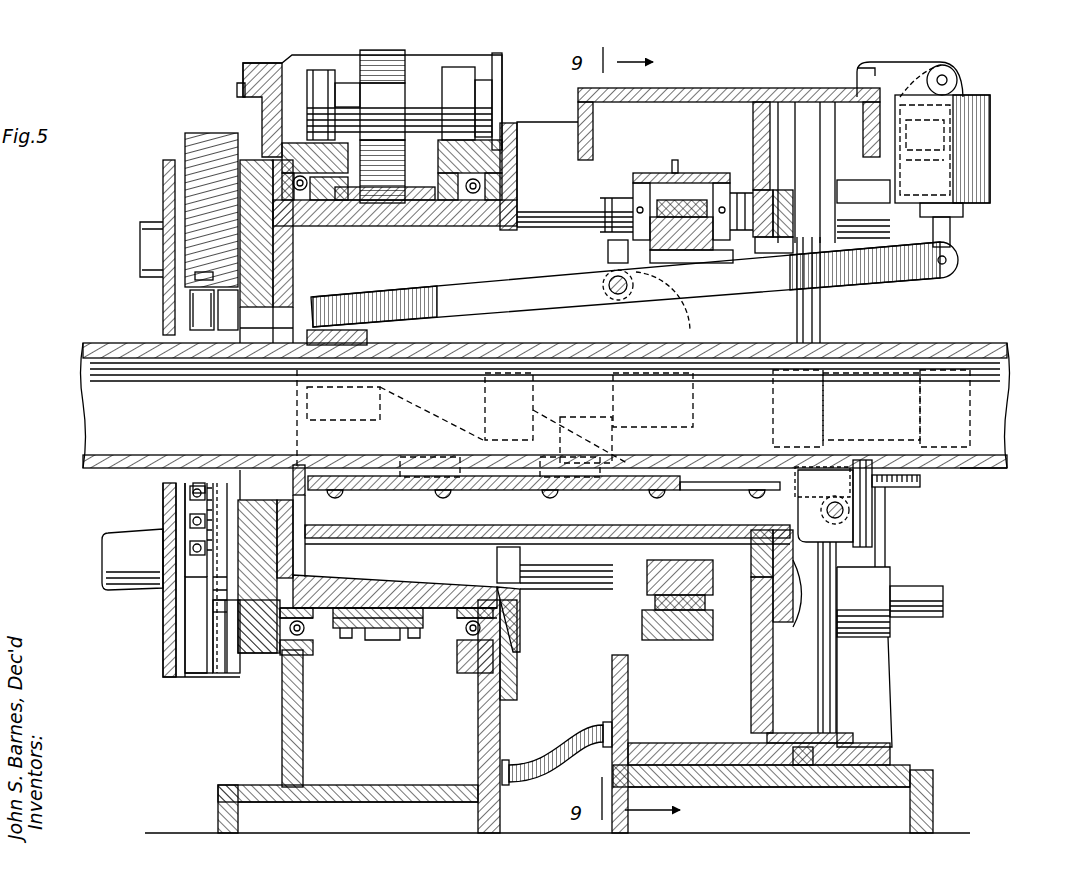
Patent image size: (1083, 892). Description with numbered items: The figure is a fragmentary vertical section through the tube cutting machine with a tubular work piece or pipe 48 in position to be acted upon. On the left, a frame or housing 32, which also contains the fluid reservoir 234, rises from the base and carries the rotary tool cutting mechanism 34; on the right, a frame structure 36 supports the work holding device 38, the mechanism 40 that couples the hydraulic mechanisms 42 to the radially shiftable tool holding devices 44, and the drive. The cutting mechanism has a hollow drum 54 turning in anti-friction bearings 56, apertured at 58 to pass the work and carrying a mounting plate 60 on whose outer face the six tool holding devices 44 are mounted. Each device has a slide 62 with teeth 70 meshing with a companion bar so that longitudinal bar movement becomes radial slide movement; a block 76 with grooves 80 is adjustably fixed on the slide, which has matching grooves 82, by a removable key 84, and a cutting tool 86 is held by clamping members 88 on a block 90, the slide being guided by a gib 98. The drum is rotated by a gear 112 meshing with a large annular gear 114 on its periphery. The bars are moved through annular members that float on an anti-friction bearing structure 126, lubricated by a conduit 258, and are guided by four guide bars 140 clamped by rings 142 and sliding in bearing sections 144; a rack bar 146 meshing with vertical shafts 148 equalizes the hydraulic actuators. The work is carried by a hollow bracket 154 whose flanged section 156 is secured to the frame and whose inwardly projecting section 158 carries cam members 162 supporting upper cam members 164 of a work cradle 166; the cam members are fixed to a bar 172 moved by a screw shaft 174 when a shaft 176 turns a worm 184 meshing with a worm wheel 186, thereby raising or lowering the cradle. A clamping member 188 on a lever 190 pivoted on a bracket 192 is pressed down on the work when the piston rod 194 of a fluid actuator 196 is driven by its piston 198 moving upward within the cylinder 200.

The frame or housing 32 is at (282, 744).
The rotary tool cutting mechanism 34 is at (168, 670).
The frame structure 36 is at (880, 691).
The work holding device 38 is at (430, 512).
The mechanism 40 is at (677, 647).
The hydraulic mechanisms 42 is at (985, 460).
The tool holding devices 44 is at (160, 302).
The pipe 48 is at (83, 345).
The rotary member or drum 54 is at (390, 592).
The anti-friction bearings 56 is at (500, 185).
The aperture 58 is at (290, 318).
The mounting plate or disk 60 is at (272, 249).
The slide 62 is at (212, 150).
The teeth 70 is at (205, 190).
The block 76 is at (200, 673).
The grooves 80 is at (212, 618).
The grooves 82 is at (214, 603).
The key 84 is at (215, 584).
The cutting tool 86 is at (190, 325).
The clamping members 88 is at (190, 548).
The block 90 is at (192, 505).
The gib 98 is at (178, 590).
The gear 112 is at (396, 158).
The annular gear 114 is at (362, 178).
The anti-friction bearing structure 126 is at (683, 230).
The guide bars 140 is at (919, 593).
The clamping rings 142 is at (630, 200).
The bearing sections 144 is at (943, 670).
The rack bar 146 is at (803, 762).
The vertical shafts 148 is at (822, 318).
The hollow bracket or frame 154 is at (632, 533).
The flanged section 156 is at (805, 600).
The inwardly projecting section 158 is at (380, 512).
The cam members 162 is at (398, 412).
The upper cam members 164 is at (398, 396).
The work cradle 166 is at (604, 492).
The bar 172 is at (692, 490).
The screw shaft 174 is at (920, 491).
The shaft 176 is at (850, 513).
The worm 184 is at (862, 528).
The worm wheel or gear 186 is at (840, 467).
The clamping member 188 is at (356, 335).
The lever 190 is at (458, 297).
The bracket 192 is at (615, 321).
The piston rod 194 is at (950, 230).
The fluid actuator 196 is at (1000, 120).
The piston 198 is at (958, 152).
The cylinder 200 is at (968, 133).
The reservoir 234 is at (557, 793).
The conduit 258 is at (674, 160).